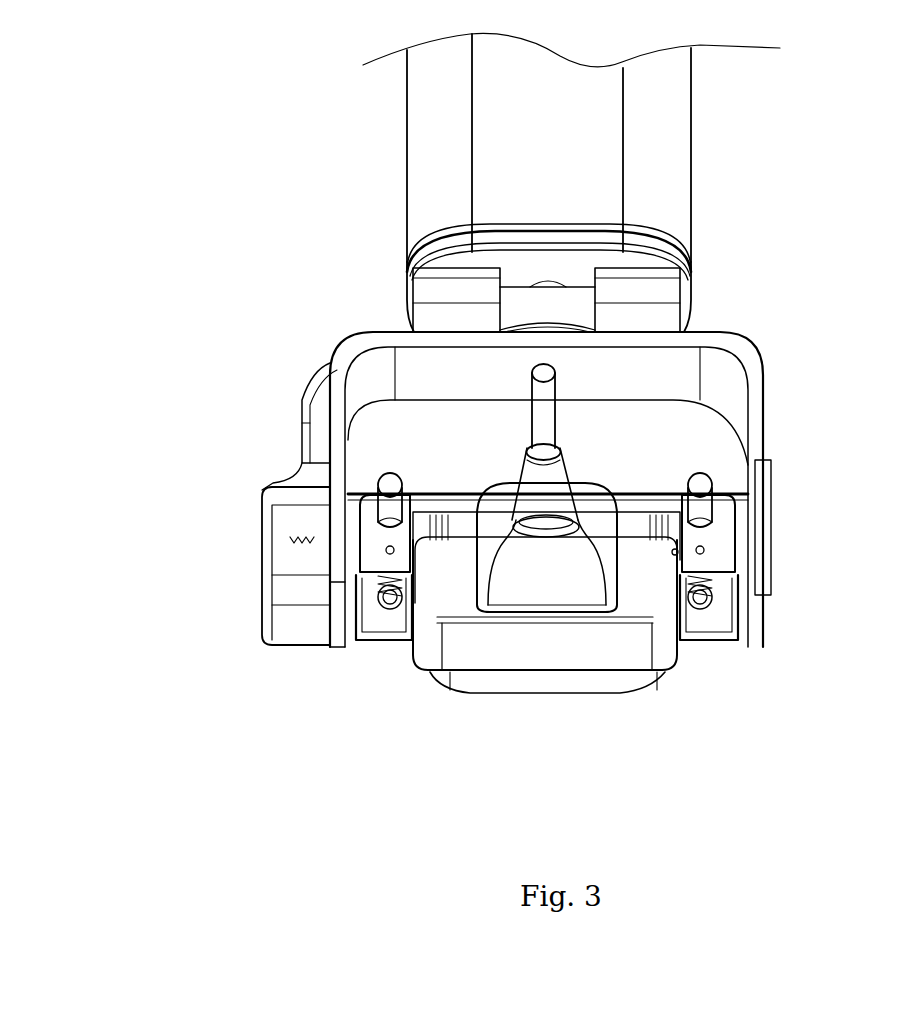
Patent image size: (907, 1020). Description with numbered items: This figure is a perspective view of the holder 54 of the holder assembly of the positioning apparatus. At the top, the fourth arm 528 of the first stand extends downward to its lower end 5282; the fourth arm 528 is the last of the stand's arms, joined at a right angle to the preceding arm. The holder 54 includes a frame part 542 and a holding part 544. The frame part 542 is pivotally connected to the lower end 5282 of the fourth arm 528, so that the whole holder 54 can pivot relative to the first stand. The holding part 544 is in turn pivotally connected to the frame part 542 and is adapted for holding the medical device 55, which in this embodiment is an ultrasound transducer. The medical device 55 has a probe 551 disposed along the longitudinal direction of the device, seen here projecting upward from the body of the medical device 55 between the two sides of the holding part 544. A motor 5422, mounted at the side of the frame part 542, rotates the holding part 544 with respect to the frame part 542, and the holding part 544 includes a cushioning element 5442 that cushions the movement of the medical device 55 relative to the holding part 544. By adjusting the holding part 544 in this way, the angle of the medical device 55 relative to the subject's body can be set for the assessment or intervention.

The fourth arm 528 is at (691, 108).
The lower end 5282 is at (655, 222).
The holder 54 is at (790, 350).
The frame part 542 is at (753, 413).
The motor 5422 is at (267, 553).
The holding part 544 is at (438, 490).
The cushioning element 5442 is at (379, 648).
The medical device 55 is at (600, 567).
The probe 551 is at (556, 421).